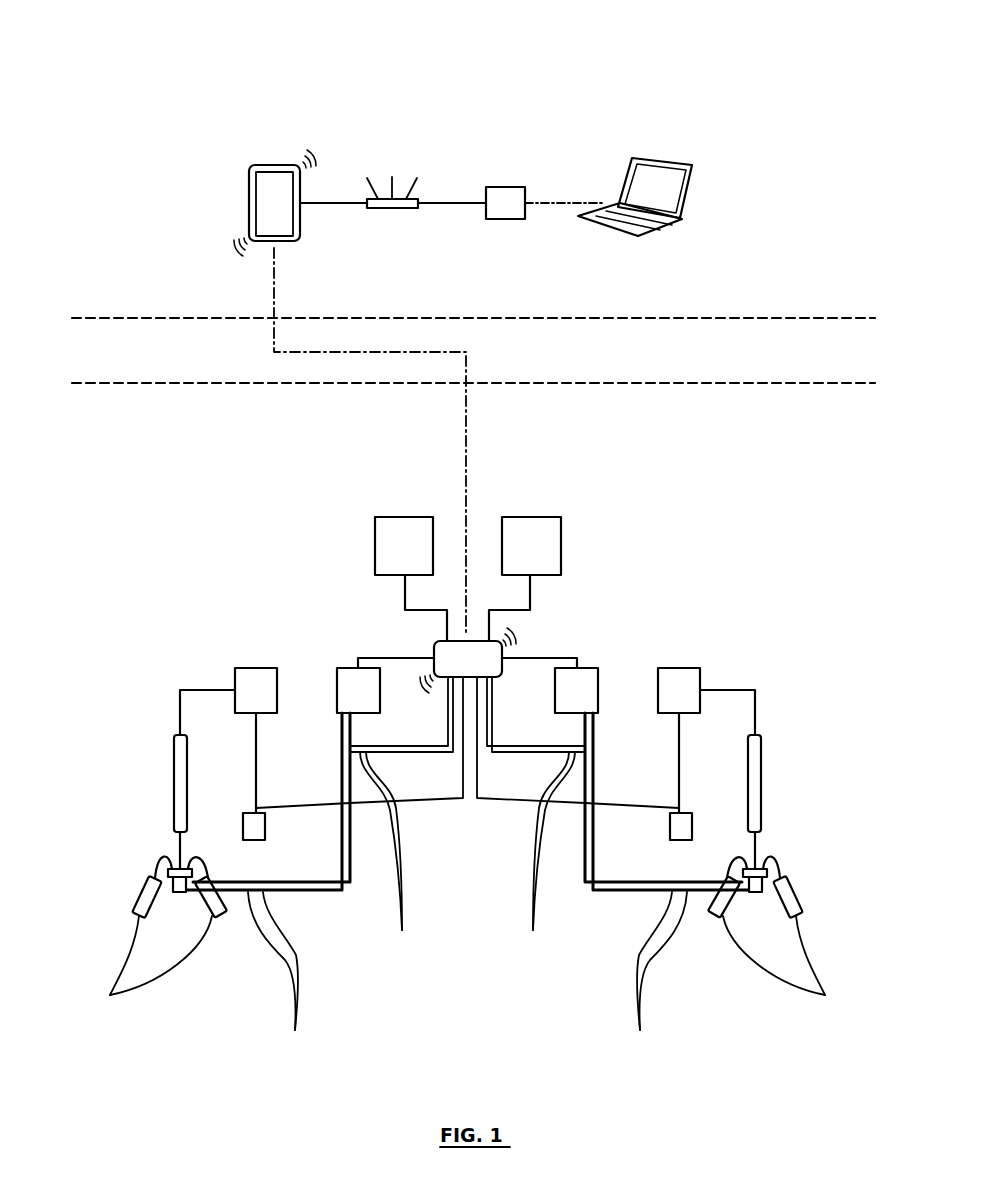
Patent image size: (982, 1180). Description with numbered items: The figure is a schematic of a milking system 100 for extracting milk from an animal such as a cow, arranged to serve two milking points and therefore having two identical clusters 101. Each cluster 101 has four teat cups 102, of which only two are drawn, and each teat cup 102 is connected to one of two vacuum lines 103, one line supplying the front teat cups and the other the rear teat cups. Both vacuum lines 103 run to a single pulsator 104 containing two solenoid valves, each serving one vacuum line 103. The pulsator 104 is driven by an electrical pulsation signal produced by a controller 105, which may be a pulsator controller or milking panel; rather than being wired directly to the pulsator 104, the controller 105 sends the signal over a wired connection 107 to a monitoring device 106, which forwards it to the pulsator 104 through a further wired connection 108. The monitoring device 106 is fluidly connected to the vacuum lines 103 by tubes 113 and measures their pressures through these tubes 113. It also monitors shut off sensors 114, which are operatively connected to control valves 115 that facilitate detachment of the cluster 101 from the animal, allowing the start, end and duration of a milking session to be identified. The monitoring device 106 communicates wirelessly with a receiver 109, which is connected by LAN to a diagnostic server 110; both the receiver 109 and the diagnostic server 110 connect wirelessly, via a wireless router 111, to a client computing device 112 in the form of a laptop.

The milking system 100 is at (66, 99).
The cluster 101 is at (98, 809).
The teat cup 102 is at (467, 934).
The vacuum line 103 is at (467, 976).
The pulsator 104 is at (345, 668).
The controller 105 is at (375, 525).
The monitoring device 106 is at (476, 640).
The wired connection 107 is at (380, 657).
The further wired connection 108 is at (380, 592).
The receiver 109 is at (248, 183).
The diagnostic server 110 is at (503, 187).
The wireless router 111 is at (382, 208).
The client computing device 112 is at (665, 225).
The tube 113 is at (467, 855).
The shut off sensor 114 is at (265, 835).
The control valve 115 is at (257, 668).